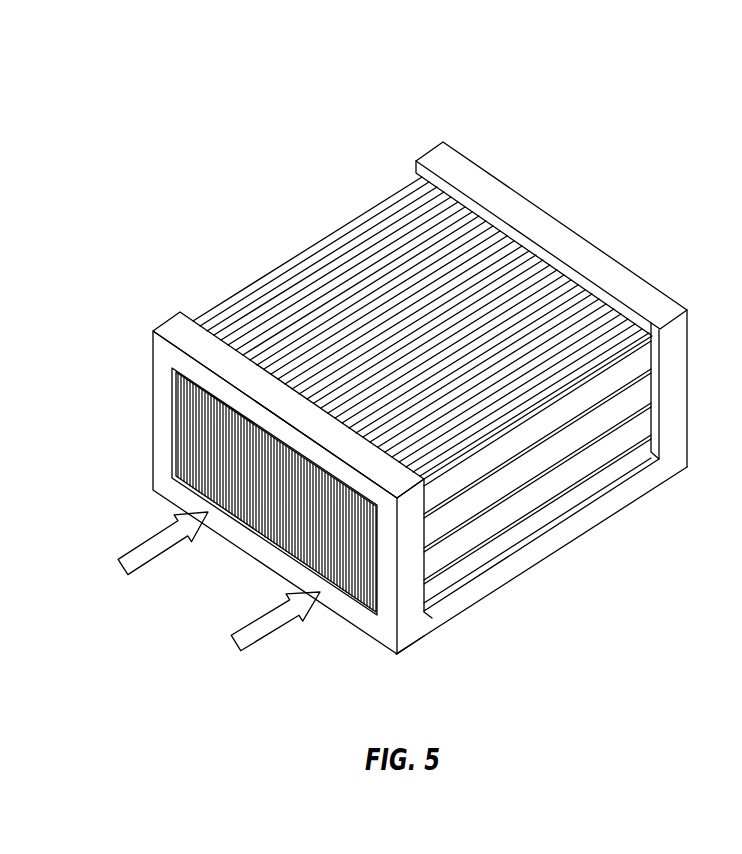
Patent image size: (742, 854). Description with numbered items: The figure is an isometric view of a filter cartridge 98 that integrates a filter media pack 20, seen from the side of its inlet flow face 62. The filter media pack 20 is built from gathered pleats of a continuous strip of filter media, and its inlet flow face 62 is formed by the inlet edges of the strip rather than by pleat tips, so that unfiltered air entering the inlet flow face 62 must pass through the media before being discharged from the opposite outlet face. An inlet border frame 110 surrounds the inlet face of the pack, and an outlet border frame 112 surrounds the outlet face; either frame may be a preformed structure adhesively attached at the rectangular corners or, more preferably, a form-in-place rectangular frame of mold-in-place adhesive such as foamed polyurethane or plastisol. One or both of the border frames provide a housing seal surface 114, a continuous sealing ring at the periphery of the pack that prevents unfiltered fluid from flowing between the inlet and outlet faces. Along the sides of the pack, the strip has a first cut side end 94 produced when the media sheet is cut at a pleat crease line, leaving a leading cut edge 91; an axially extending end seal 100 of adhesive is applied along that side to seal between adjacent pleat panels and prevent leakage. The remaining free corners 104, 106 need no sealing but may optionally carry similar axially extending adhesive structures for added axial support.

The filter cartridge 98 is at (592, 146).
The filter media pack 20 is at (315, 245).
The free corner 106 is at (390, 193).
The free corner 104 is at (560, 380).
The first cut side end 94 is at (532, 524).
The leading cut edge 91 is at (473, 593).
The end seal 100 is at (423, 632).
The inlet border frame 110 is at (175, 329).
The outlet border frame 112 is at (437, 158).
The housing seal surface 114 is at (195, 370).
The inlet flow face 62 is at (270, 525).